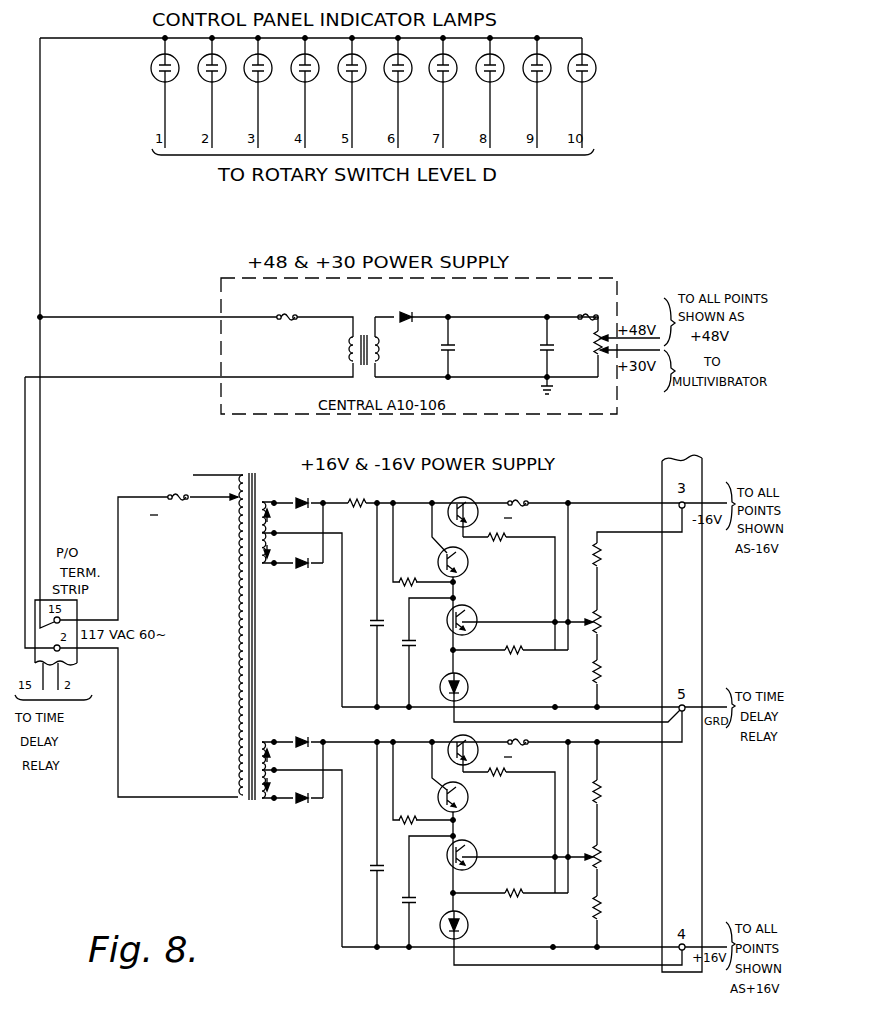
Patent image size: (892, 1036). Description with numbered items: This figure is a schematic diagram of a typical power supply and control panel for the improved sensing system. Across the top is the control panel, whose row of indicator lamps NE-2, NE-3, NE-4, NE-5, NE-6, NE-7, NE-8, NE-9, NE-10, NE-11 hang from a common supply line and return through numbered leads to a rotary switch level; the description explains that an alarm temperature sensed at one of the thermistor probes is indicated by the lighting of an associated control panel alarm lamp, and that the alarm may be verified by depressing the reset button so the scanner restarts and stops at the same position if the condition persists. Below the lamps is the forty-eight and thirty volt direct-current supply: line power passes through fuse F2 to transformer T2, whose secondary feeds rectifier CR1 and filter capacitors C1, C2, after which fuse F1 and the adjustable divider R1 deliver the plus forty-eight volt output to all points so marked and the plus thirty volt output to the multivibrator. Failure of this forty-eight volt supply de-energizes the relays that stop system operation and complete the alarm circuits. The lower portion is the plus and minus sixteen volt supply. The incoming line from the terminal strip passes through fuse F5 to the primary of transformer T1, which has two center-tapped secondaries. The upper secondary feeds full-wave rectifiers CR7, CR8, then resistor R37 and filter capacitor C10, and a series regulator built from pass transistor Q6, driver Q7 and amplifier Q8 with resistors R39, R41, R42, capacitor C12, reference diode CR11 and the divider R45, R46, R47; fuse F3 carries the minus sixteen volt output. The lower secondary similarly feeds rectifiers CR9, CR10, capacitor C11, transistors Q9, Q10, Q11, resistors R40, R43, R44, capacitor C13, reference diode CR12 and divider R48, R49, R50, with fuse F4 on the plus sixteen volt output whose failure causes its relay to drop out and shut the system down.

The indicator lamp NE-2 is at (175, 92).
The indicator lamp NE-3 is at (222, 92).
The indicator lamp NE-4 is at (268, 92).
The indicator lamp NE-5 is at (315, 92).
The indicator lamp NE-6 is at (362, 92).
The indicator lamp NE-7 is at (408, 92).
The indicator lamp NE-8 is at (453, 92).
The indicator lamp NE-9 is at (500, 92).
The indicator lamp NE-10 is at (551, 92).
The indicator lamp NE-11 is at (596, 93).
The fuse 1 amp F1 is at (580, 314).
The fuse 2 amp F2 is at (283, 316).
The fuse 1/2 amp F3 is at (523, 505).
The fuse 1/4 amp F4 is at (523, 745).
The fuse 1/8 amp F5 is at (194, 500).
The power transformer T1 is at (254, 625).
The power transformer T2 is at (364, 337).
The rectifier diode CR1 is at (406, 307).
The rectifier diode CR7 is at (297, 493).
The rectifier diode CR8 is at (299, 574).
The rectifier diode CR9 is at (306, 732).
The rectifier diode CR10 is at (305, 809).
The zener reference diode CR11 is at (554, 697).
The zener reference diode CR12 is at (554, 938).
The filter capacitor C1 is at (441, 347).
The filter capacitor C2 is at (537, 347).
The filter capacitor C10 is at (366, 605).
The filter capacitor C11 is at (372, 844).
The capacitor C12 is at (427, 652).
The capacitor C13 is at (427, 891).
The potentiometer R1 is at (588, 347).
The resistor R37 is at (354, 492).
The resistor R39 is at (423, 544).
The resistor R40 is at (423, 783).
The resistor R41 is at (509, 591).
The resistor R42 is at (510, 658).
The resistor R43 is at (509, 830).
The resistor R44 is at (510, 883).
The resistor R45 is at (614, 554).
The potentiometer R46 is at (614, 621).
The resistor R47 is at (614, 671).
The resistor R48 is at (614, 791).
The potentiometer R49 is at (614, 856).
The resistor R50 is at (614, 907).
The pass transistor Q6 is at (451, 506).
The driver transistor Q7 is at (464, 610).
The error amplifier transistor Q8 is at (520, 614).
The pass transistor Q9 is at (453, 745).
The driver transistor Q10 is at (469, 846).
The error amplifier transistor Q11 is at (520, 850).